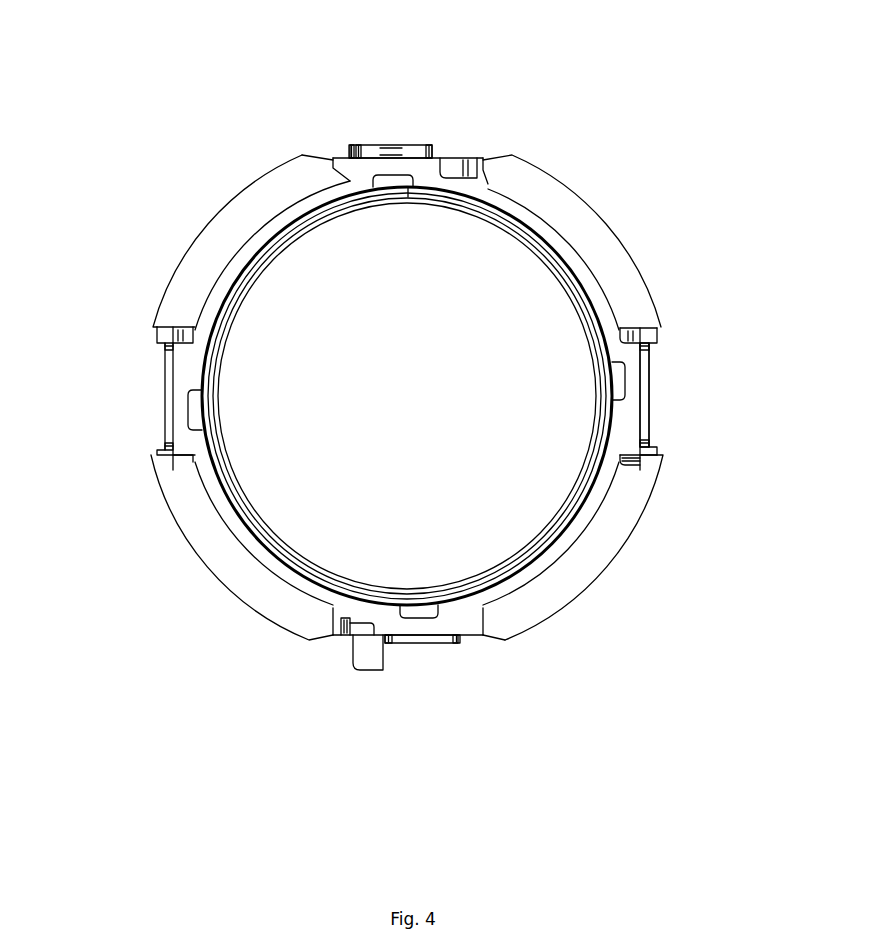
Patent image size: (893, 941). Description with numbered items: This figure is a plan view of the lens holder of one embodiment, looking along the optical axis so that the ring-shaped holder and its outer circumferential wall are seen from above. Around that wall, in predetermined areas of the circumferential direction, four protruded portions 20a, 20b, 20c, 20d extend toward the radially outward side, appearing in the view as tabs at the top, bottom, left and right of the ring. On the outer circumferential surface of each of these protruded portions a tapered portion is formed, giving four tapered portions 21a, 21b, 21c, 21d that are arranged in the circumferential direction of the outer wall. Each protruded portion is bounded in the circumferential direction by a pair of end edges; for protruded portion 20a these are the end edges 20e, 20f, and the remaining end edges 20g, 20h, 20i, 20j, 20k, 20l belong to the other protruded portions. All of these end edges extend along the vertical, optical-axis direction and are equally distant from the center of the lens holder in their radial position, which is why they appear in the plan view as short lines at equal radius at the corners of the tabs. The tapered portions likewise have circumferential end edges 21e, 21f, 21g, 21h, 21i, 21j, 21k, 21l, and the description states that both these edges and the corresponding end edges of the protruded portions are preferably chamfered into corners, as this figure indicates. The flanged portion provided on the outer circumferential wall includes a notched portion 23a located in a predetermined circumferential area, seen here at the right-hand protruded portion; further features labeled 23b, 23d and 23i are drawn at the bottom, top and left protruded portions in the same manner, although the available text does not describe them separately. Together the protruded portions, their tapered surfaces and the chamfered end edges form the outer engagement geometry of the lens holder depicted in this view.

The protruded portion 20a is at (630, 383).
The protruded portion 20b is at (443, 622).
The protruded portion 20c is at (190, 405).
The protruded portion 20d is at (370, 165).
The end edge of protruded portion 20e is at (640, 330).
The end edge of protruded portion 20f is at (637, 465).
The end edge of protruded portion 20g is at (485, 637).
The end edge of protruded portion 20h is at (350, 638).
The end edge of protruded portion 20i is at (195, 460).
The end edge of protruded portion 20j is at (176, 330).
The end edge of protruded portion 20k is at (330, 163).
The end edge of protruded portion 20l is at (478, 166).
The tapered portion 21a is at (644, 420).
The tapered portion 21b is at (405, 648).
The tapered portion 21c is at (165, 447).
The tapered portion 21d is at (393, 153).
The end edge of tapered portion 21e is at (650, 338).
The end edge of tapered portion 21f is at (650, 456).
The end edge of tapered portion 21g is at (462, 645).
The end edge of tapered portion 21h is at (380, 650).
The end edge of tapered portion 21i is at (172, 460).
The end edge of tapered portion 21j is at (170, 345).
The end edge of tapered portion 21k is at (350, 152).
The end edge of tapered portion 21l is at (433, 152).
The notched portion 23a is at (645, 440).
The flange portion 23b is at (432, 650).
The flange portion 23d is at (356, 147).
The flange portion 23i is at (152, 378).